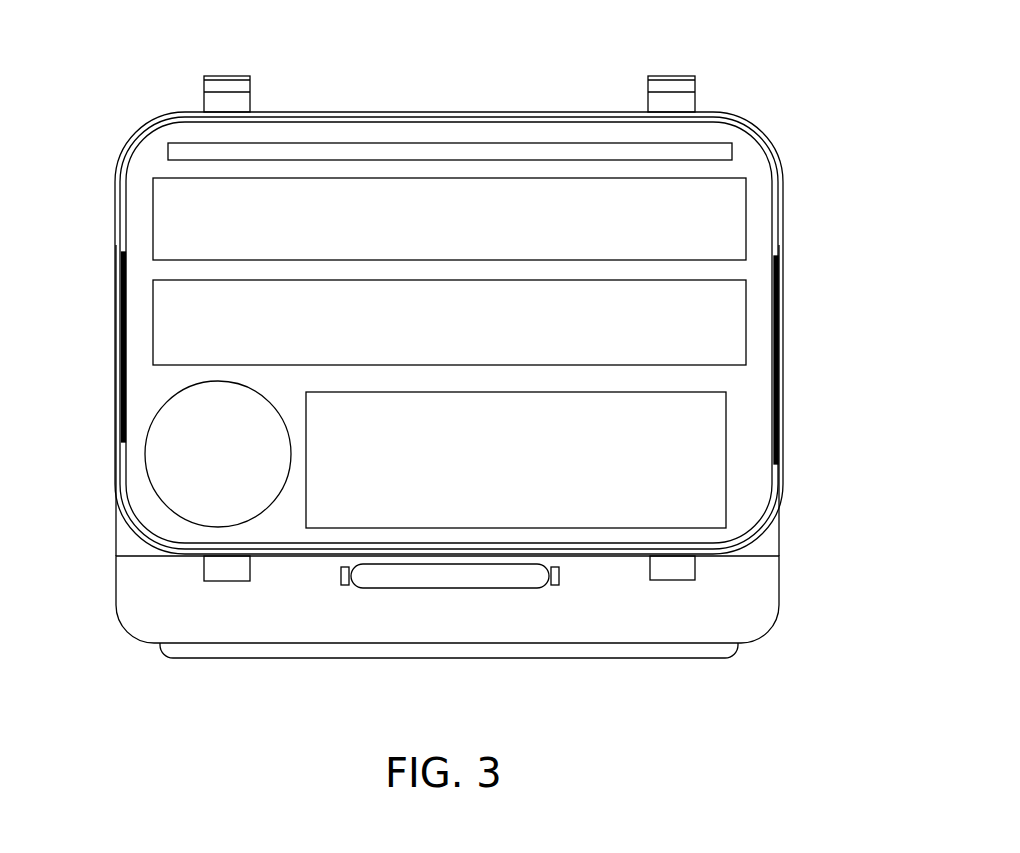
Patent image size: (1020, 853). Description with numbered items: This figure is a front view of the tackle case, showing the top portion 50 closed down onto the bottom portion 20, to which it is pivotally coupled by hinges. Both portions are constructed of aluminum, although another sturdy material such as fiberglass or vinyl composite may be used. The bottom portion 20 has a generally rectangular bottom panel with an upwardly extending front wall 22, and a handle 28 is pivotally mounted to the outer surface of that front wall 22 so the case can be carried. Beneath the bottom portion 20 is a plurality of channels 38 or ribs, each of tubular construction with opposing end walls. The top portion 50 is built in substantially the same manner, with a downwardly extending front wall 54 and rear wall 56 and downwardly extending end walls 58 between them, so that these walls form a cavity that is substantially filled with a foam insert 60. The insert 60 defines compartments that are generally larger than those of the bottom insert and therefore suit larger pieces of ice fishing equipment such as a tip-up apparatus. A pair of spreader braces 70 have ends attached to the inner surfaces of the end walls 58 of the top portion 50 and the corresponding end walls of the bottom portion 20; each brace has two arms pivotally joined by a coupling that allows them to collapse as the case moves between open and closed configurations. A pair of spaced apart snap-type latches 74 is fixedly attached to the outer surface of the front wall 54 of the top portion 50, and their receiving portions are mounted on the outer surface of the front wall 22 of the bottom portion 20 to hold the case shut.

The bottom portion 20 is at (812, 618).
The front wall 22 is at (278, 644).
The handle 28 is at (393, 589).
The channels 38 is at (222, 660).
The top portion 50 is at (820, 325).
The front wall 54 is at (367, 110).
The rear wall 56 is at (270, 550).
The end walls 58 is at (116, 287).
The insert 60 is at (753, 399).
The spreader braces 70 is at (779, 532).
The snap-type latches 74 is at (229, 73).